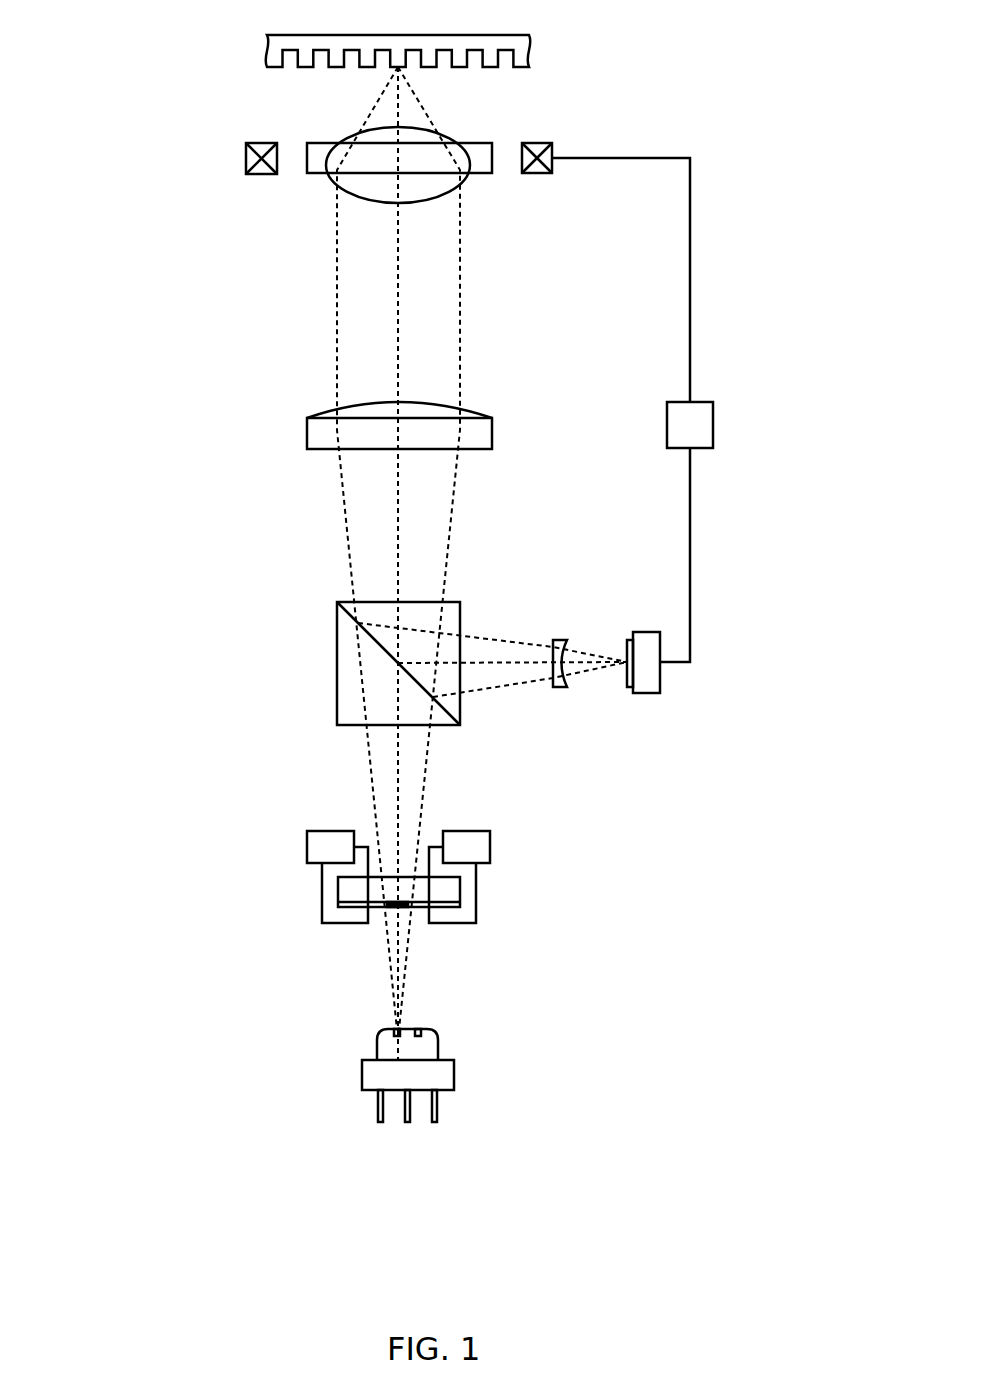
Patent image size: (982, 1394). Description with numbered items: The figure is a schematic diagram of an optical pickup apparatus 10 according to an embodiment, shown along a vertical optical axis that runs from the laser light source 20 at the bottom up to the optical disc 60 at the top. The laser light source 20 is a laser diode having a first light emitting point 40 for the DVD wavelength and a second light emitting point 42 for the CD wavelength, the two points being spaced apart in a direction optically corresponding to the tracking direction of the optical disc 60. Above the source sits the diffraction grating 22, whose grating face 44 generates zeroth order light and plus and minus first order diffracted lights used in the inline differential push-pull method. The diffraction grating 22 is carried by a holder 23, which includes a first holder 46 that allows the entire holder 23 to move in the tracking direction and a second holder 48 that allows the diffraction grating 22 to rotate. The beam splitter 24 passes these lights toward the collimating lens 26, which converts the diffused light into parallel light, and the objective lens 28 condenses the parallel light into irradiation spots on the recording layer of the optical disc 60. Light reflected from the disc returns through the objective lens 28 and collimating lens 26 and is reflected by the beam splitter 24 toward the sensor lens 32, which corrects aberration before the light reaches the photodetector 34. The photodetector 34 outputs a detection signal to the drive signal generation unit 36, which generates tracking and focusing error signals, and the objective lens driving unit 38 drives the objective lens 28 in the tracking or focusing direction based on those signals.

The optical pickup apparatus 10 is at (178, 476).
The laser light source 20 is at (425, 1037).
The diffraction grating 22 is at (462, 892).
The holder 23 is at (401, 877).
The beam splitter 24 is at (337, 662).
The collimating lens 26 is at (492, 420).
The objective lens 28 is at (492, 145).
The sensor lens 32 is at (560, 688).
The photodetector 34 is at (647, 693).
The drive signal generation unit 36 is at (713, 425).
The objective lens driving unit 38 is at (248, 173).
The light emitting point 40 is at (396, 1027).
The light emitting point 42 is at (419, 1027).
The grating face 44 is at (445, 907).
The holder 46 is at (333, 830).
The holder 48 is at (322, 908).
The optical disc 60 is at (530, 56).